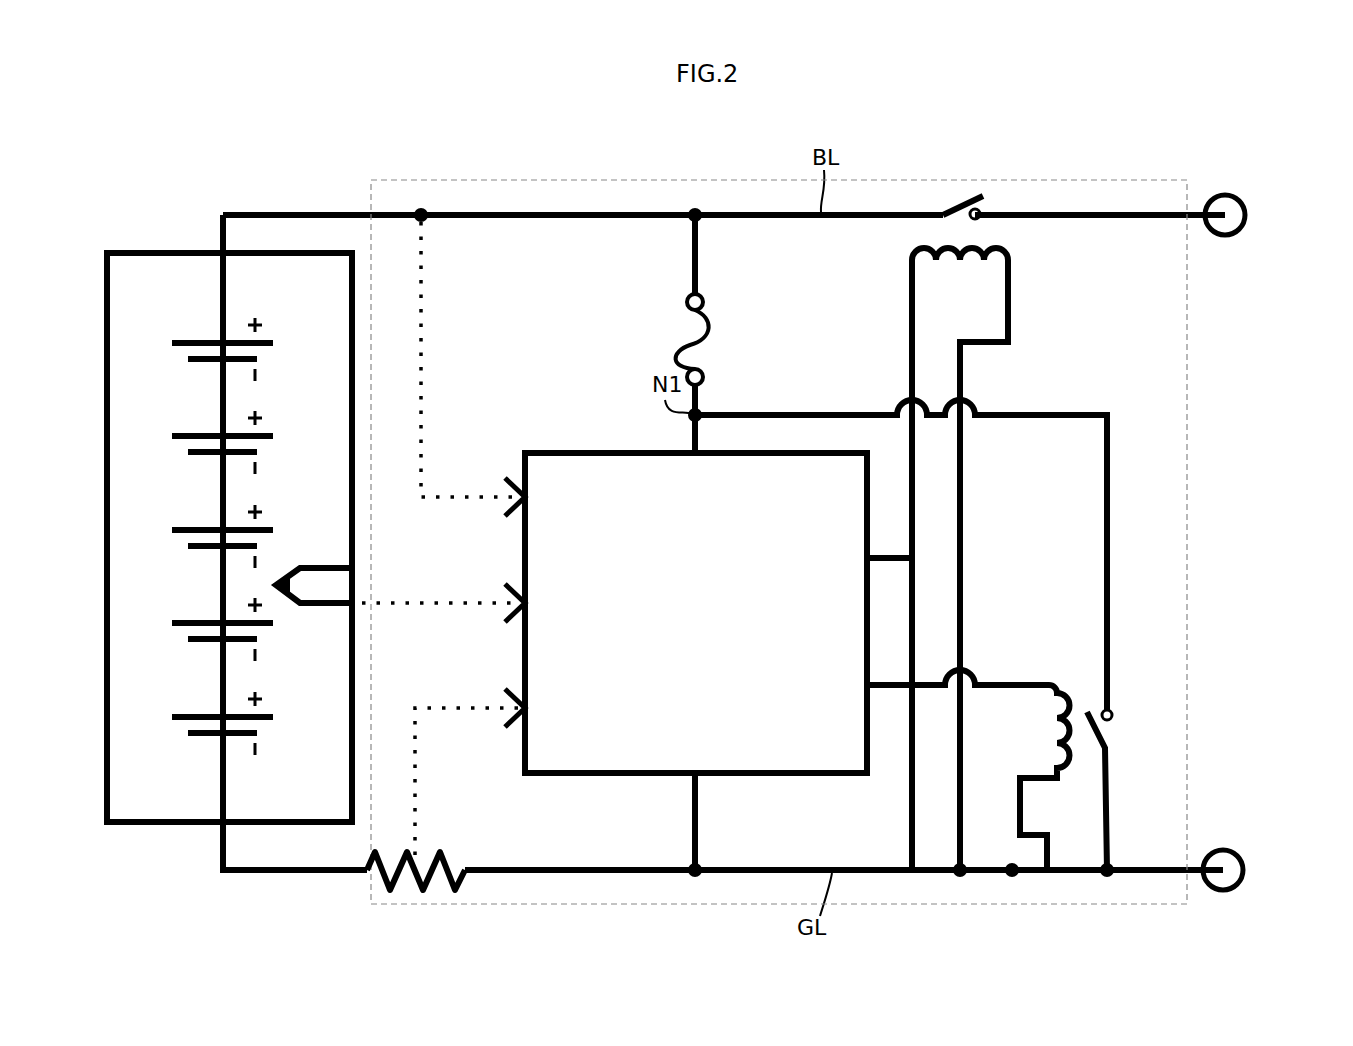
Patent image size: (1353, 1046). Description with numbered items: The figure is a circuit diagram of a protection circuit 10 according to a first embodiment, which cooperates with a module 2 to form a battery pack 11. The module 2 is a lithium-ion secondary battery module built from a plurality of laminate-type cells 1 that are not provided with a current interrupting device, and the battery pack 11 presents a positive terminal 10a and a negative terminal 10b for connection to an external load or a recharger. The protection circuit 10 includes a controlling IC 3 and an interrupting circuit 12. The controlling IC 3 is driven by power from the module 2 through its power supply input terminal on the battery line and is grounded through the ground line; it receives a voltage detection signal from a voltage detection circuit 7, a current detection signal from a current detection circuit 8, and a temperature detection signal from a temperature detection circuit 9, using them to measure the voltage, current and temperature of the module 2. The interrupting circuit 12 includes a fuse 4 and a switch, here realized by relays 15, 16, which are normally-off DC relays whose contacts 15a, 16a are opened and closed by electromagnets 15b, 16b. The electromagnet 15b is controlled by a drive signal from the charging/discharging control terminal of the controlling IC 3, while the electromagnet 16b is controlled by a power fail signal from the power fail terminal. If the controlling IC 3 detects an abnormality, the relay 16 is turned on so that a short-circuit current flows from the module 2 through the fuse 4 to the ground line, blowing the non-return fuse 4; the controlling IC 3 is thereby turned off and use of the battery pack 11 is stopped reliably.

The cell 1 is at (185, 341).
The module 2 is at (182, 253).
The controlling IC 3 is at (645, 452).
The fuse 4 is at (706, 341).
The voltage detection circuit 7 is at (418, 313).
The current detection circuit 8 is at (418, 790).
The temperature detection circuit 9 is at (410, 598).
The protection circuit 10 is at (372, 198).
The positive terminal 10a is at (1245, 214).
The negative terminal 10b is at (1243, 870).
The battery pack 11 is at (245, 165).
The interrupting circuit 12 is at (806, 392).
The relay 15 is at (954, 526).
The contact 15a is at (956, 207).
The electromagnet 15b is at (985, 252).
The relay 16 is at (1023, 755).
The contact 16a is at (1107, 740).
The electromagnet 16b is at (1050, 733).